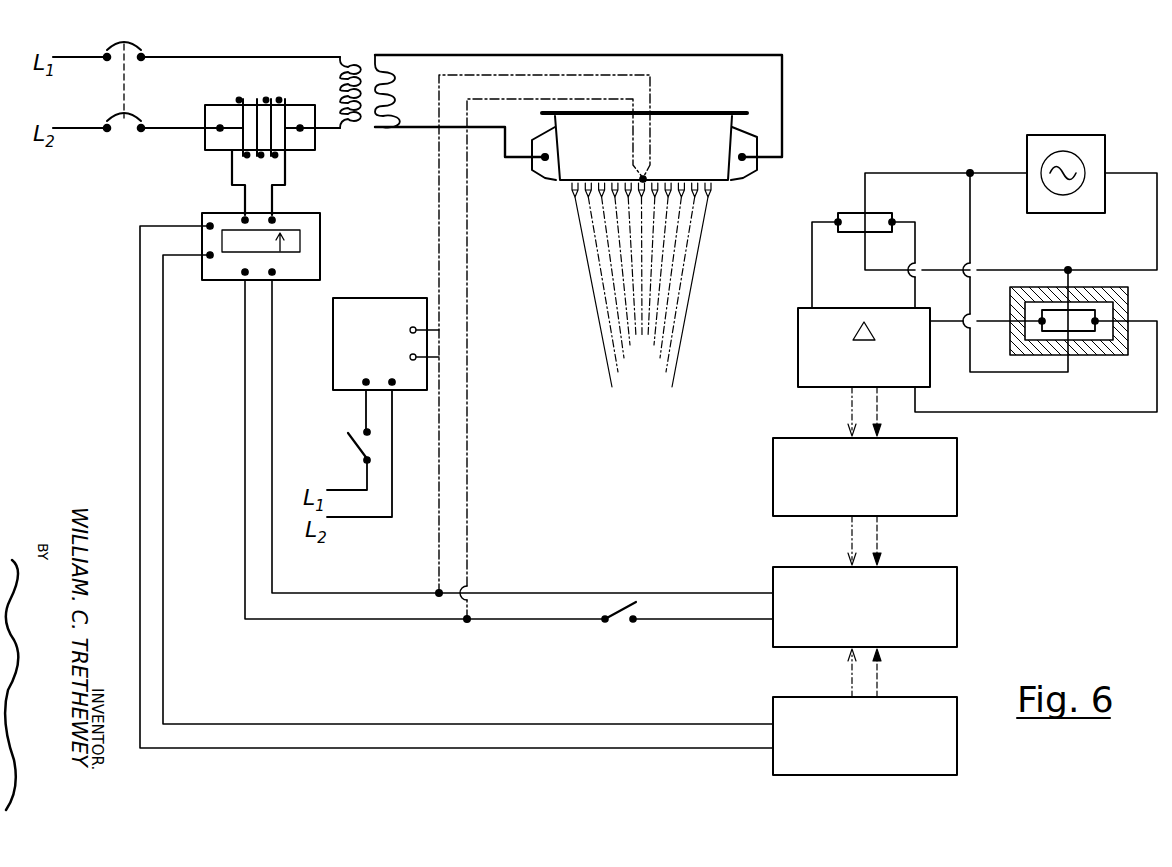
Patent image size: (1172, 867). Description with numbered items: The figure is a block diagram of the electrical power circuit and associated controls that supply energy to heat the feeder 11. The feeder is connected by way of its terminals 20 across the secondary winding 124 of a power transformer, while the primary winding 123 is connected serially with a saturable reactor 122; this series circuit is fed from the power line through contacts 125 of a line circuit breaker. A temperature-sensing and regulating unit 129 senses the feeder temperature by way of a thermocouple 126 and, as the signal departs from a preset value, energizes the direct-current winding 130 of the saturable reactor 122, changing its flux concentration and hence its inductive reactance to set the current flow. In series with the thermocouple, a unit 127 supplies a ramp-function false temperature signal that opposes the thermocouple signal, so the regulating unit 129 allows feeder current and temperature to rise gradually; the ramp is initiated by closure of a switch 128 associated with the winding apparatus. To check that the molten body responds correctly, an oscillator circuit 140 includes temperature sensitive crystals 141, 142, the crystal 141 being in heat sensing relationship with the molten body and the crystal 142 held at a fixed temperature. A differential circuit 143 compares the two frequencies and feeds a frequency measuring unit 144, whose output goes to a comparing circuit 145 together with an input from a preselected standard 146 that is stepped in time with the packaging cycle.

The feeder 11 is at (705, 113).
The terminals 20 is at (542, 176).
The saturable reactor 122 is at (245, 112).
The primary winding 123 is at (345, 60).
The secondary winding 124 is at (414, 40).
The contacts 125 is at (141, 44).
The thermocouple 126 is at (640, 176).
The unit 127 is at (410, 298).
The switch 128 is at (352, 440).
The temperature-sensing and regulating unit 129 is at (300, 212).
The direct-current winding 130 is at (262, 99).
The oscillator circuit 140 is at (1078, 135).
The crystal 141 is at (885, 213).
The crystal 142 is at (1080, 332).
The differential circuit 143 is at (798, 310).
The frequency measuring unit 144 is at (808, 438).
The comparing circuit 145 is at (808, 567).
The preselected standard 146 is at (808, 697).